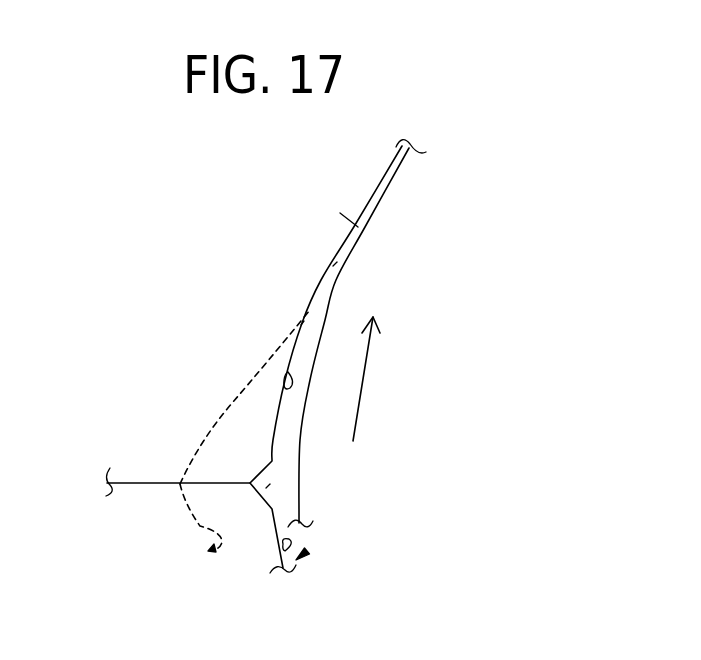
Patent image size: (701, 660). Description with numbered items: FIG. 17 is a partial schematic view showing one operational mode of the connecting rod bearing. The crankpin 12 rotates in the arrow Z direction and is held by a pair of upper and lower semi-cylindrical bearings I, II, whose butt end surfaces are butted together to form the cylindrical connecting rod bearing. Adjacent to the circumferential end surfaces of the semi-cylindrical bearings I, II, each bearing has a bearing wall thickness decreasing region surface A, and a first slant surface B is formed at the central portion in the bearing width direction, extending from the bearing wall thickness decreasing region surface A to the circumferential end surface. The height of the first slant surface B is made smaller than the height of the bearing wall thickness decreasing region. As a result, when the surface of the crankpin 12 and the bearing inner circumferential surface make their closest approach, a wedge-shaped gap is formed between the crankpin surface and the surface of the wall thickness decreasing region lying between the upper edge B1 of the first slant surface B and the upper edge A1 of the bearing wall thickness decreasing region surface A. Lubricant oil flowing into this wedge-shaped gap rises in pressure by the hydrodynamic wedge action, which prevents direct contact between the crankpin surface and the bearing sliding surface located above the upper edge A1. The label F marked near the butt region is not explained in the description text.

The crankpin 12 is at (447, 205).
The first semi-cylindrical bearing I is at (356, 225).
The second semi-cylindrical bearing II is at (306, 552).
The bearing wall thickness decreasing region surface A is at (288, 372).
The upper edge of bearing wall thickness decreasing region A1 is at (334, 265).
The first slant surface B is at (207, 441).
The upper edge of first slant surface B1 is at (302, 324).
The fillet portion F is at (268, 486).
The arrow Z direction Z is at (363, 376).